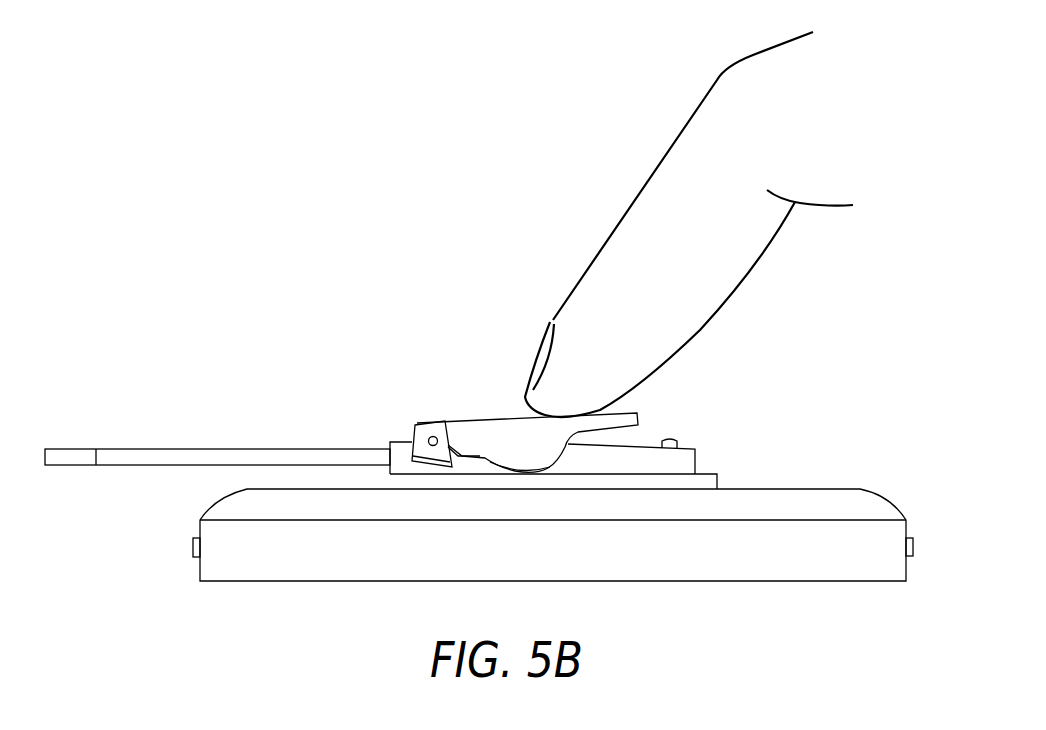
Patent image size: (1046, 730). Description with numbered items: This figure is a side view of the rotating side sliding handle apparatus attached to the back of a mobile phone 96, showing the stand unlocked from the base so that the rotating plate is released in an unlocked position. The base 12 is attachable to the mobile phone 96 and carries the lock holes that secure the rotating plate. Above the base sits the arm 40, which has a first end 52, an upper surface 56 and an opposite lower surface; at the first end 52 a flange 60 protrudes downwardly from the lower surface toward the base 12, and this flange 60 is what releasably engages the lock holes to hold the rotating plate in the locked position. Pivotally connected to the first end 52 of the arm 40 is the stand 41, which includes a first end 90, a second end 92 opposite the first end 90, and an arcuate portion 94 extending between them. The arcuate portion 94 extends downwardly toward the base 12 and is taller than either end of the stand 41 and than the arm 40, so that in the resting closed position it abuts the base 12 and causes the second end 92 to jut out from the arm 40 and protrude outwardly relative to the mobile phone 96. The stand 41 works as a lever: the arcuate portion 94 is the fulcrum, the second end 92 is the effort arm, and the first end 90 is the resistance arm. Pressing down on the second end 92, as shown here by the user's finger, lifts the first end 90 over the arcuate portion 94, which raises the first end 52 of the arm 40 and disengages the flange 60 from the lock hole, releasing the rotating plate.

The base 12 is at (703, 482).
The arm 40 is at (685, 462).
The stand 41 is at (502, 433).
The first end 52 is at (423, 427).
The upper surface 56 is at (647, 440).
The flange 60 is at (412, 440).
The first end 90 is at (445, 441).
The second end 92 is at (638, 414).
The arcuate portion 94 is at (524, 452).
The mobile phone 96 is at (778, 549).